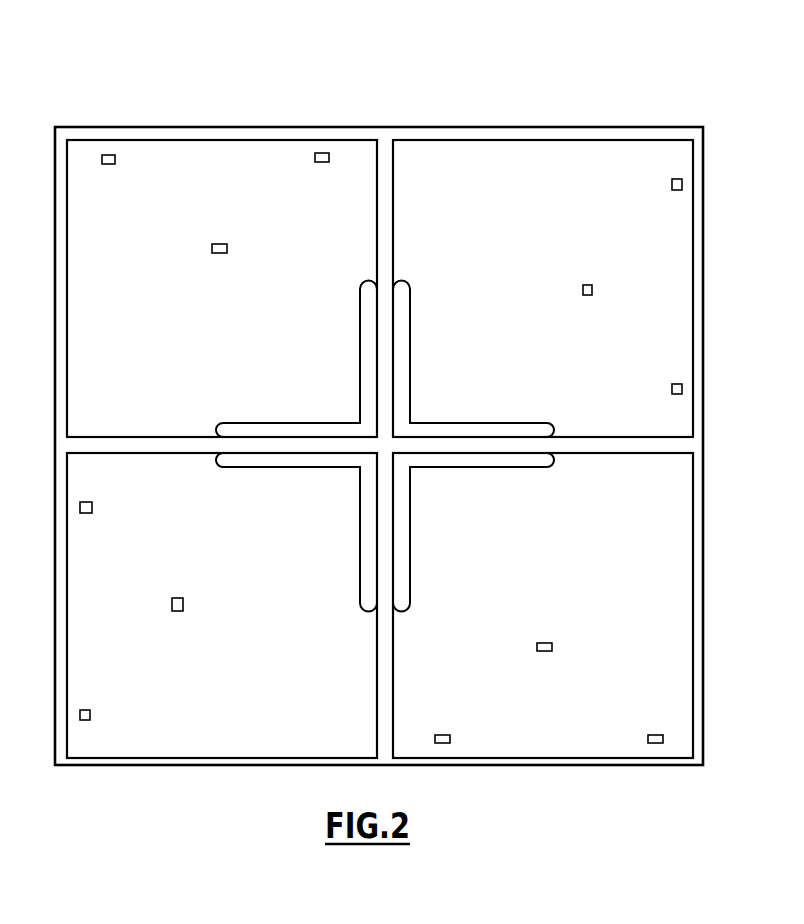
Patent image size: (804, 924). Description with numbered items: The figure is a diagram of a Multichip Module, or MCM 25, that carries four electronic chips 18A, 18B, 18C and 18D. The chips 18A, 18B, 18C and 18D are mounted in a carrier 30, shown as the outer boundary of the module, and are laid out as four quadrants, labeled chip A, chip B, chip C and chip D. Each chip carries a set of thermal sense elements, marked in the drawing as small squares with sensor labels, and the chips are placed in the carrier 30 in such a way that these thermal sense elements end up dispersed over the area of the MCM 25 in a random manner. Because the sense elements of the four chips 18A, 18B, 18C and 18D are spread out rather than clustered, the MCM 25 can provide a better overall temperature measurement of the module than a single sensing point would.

The Multichip Module (MCM) 25 is at (467, 66).
The carrier 30 is at (122, 127).
The electronic chip 18A is at (234, 157).
The electronic chip 18B is at (578, 153).
The electronic chip 18C is at (237, 744).
The electronic chip 18D is at (538, 744).